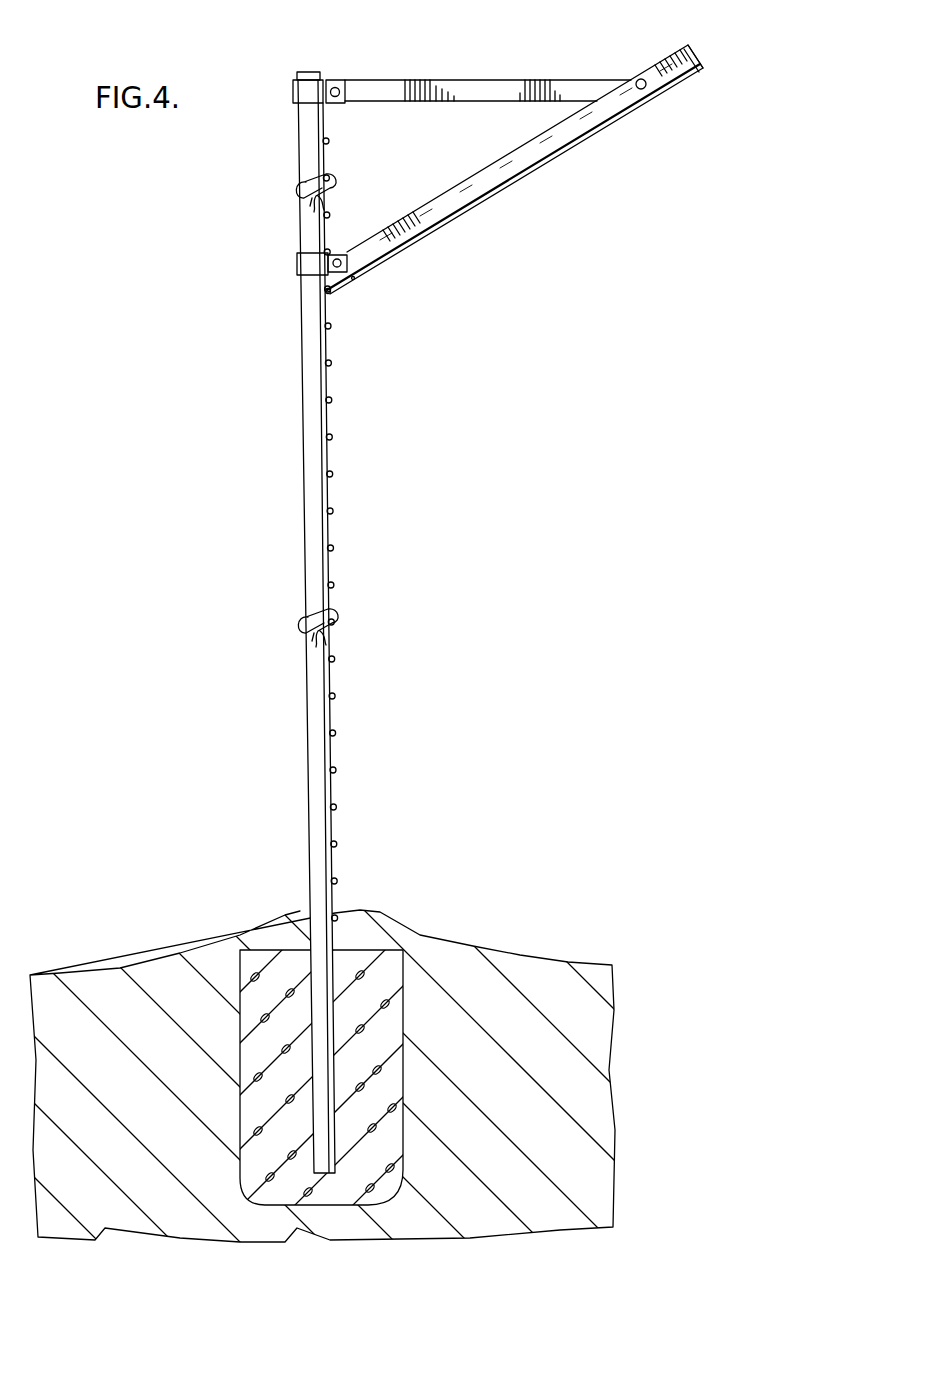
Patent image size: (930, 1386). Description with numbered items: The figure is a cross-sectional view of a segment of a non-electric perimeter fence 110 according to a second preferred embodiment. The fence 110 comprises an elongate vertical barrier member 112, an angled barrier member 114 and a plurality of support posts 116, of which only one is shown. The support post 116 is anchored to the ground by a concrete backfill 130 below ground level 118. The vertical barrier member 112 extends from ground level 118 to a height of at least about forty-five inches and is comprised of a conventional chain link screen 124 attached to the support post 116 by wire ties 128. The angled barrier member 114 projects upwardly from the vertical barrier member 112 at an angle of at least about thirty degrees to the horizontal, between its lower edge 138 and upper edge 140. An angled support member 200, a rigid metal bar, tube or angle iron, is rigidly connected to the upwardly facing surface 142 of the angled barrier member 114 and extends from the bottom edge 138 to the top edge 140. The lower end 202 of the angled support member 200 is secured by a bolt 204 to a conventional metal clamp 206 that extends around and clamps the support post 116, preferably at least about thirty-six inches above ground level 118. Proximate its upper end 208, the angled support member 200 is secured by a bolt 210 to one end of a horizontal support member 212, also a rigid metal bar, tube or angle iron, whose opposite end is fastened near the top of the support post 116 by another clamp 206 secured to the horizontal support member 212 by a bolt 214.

The non-electric perimeter fence 110 is at (482, 603).
The vertical barrier member 112 is at (298, 622).
The angled barrier member 114 is at (525, 176).
The support post 116 is at (305, 732).
The ground level 118 is at (250, 915).
The chain link screen 124 is at (332, 470).
The wire ties 128 is at (300, 186).
The concrete backfill 130 is at (392, 957).
The lower edge of angled barrier member 138 is at (331, 293).
The upper edge of angled barrier member 140 is at (703, 68).
The upwardly facing surface 142 is at (447, 207).
The angled support member 200 is at (554, 164).
The lower end of angled support member 202 is at (337, 255).
The bolt 204 is at (356, 276).
The metal clamp 206 is at (293, 90).
The upper end of angled support member 208 is at (700, 47).
The bolt 210 is at (641, 79).
The horizontal support member 212 is at (512, 80).
The bolt 214 is at (341, 88).